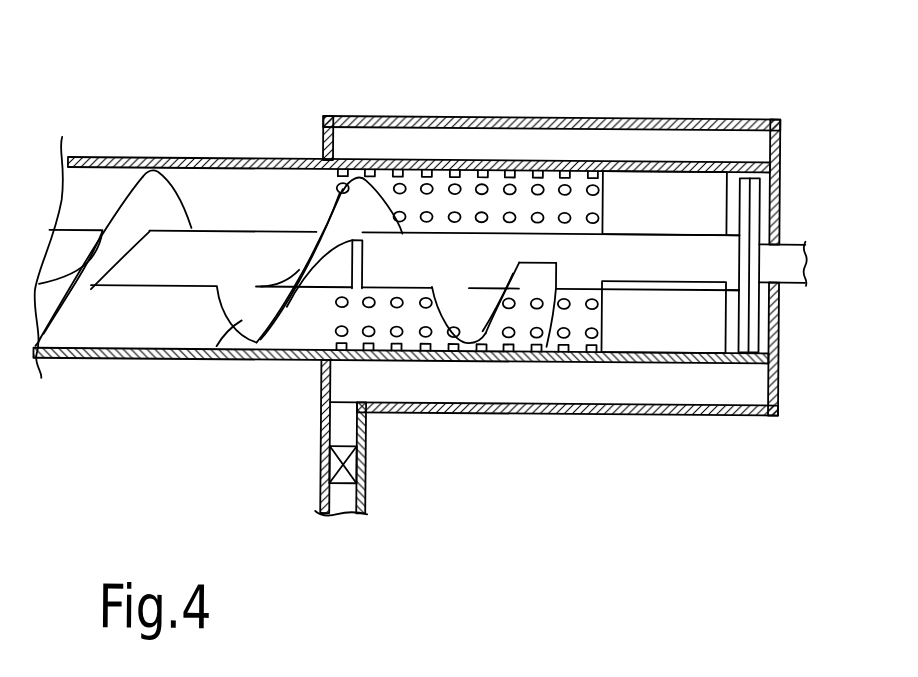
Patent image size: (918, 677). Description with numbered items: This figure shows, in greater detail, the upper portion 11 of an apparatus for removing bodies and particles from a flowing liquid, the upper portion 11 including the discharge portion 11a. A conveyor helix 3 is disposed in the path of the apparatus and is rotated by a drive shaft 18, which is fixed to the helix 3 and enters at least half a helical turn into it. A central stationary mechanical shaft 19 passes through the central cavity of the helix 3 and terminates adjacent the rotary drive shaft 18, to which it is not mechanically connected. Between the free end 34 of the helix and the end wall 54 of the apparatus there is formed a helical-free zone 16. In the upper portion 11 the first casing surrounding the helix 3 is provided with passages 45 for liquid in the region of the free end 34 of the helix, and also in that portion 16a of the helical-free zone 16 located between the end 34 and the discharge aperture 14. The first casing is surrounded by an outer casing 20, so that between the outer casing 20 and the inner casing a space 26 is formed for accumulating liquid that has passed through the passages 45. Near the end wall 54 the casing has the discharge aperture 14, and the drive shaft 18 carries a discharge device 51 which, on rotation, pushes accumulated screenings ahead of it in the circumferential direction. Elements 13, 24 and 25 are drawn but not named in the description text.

The conveyor helix 3 is at (217, 359).
The upper portion 11 is at (340, 91).
The discharge portion 11a is at (741, 131).
The end plate 13 is at (780, 304).
The discharge aperture 14 is at (718, 178).
The helical-free zone 16 is at (640, 185).
The portion of the first casing with passages 16a is at (583, 196).
The drive shaft 18 is at (452, 240).
The central stationary mechanical shaft 19 is at (207, 252).
The outer casing 20 is at (588, 116).
The drain pipe 24 is at (346, 421).
The valve 25 is at (367, 467).
The space 26 is at (347, 381).
The free end of the helix 34 is at (545, 344).
The passages 45 is at (457, 360).
The discharge device 51 is at (673, 332).
The end wall 54 is at (784, 400).